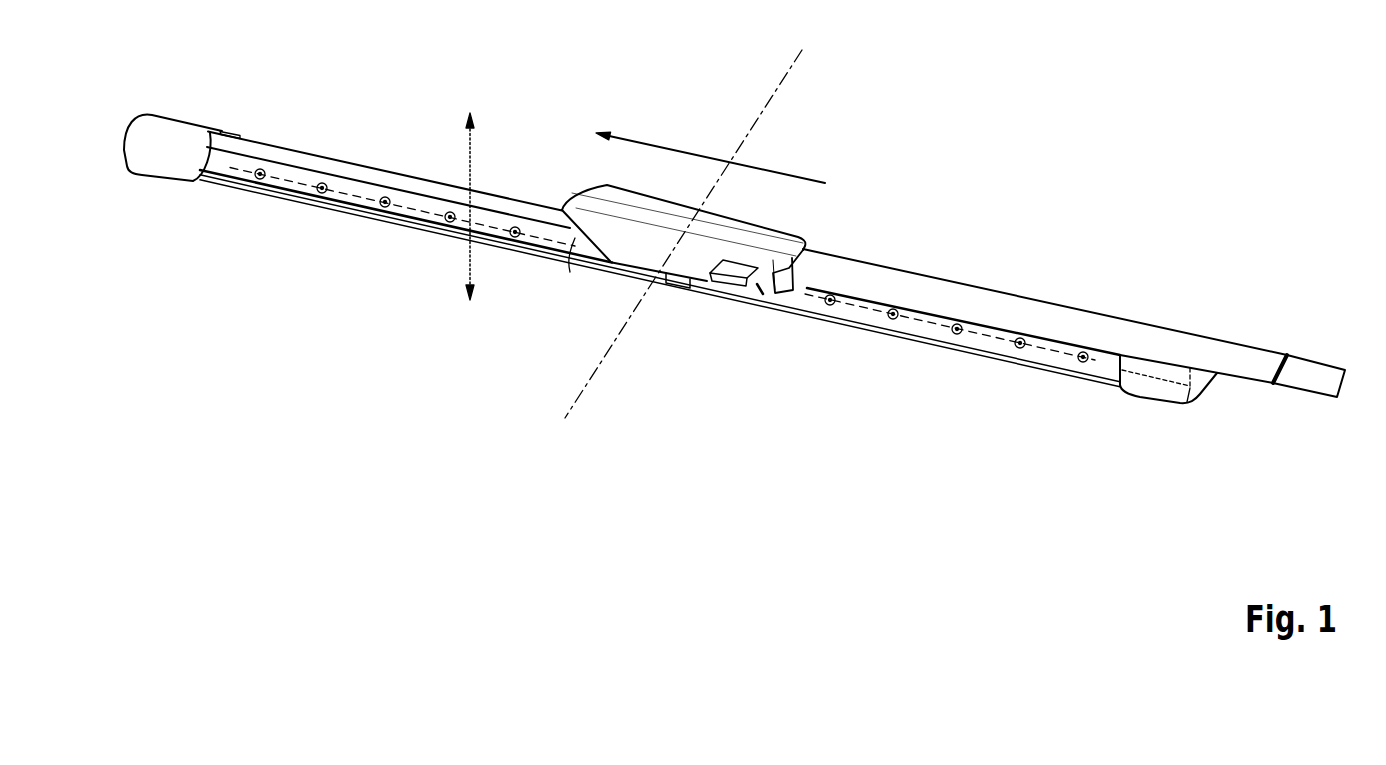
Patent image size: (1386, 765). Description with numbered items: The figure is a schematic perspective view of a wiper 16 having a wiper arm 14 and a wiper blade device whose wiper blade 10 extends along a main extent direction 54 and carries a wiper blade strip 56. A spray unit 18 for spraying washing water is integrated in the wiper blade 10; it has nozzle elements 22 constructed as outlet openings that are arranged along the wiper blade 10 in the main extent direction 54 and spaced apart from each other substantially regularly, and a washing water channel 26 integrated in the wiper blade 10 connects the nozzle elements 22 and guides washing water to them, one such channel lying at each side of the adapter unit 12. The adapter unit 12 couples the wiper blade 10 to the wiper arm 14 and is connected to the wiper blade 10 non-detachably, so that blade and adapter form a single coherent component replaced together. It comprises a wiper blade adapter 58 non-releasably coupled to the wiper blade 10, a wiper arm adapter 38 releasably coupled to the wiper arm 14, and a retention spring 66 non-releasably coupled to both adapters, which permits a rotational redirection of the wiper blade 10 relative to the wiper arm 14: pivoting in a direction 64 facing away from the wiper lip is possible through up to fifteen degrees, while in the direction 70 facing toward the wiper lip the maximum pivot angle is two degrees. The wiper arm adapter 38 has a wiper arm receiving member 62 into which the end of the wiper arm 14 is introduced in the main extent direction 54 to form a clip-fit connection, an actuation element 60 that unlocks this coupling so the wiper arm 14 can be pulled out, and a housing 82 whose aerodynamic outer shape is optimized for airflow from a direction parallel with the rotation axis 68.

The wiper blade 10 is at (296, 162).
The adapter unit 12 is at (799, 213).
The wiper arm 14 is at (1127, 325).
The wiper 16 is at (895, 162).
The spray unit 18 is at (930, 355).
The nozzle elements 22 is at (912, 312).
The washing water channel 26 is at (298, 183).
The wiper arm adapter 38 is at (630, 243).
The main extent direction 54 is at (705, 150).
The wiper blade strip 56 is at (373, 178).
The wiper blade adapter 58 is at (672, 290).
The actuation element 60 is at (742, 282).
The wiper arm receiving member 62 is at (790, 292).
The direction facing away from wiper lip 64 is at (470, 158).
The retention spring 66 is at (760, 292).
The rotation axis 68 is at (593, 375).
The direction facing toward wiper lip 70 is at (470, 268).
The housing 82 is at (583, 224).